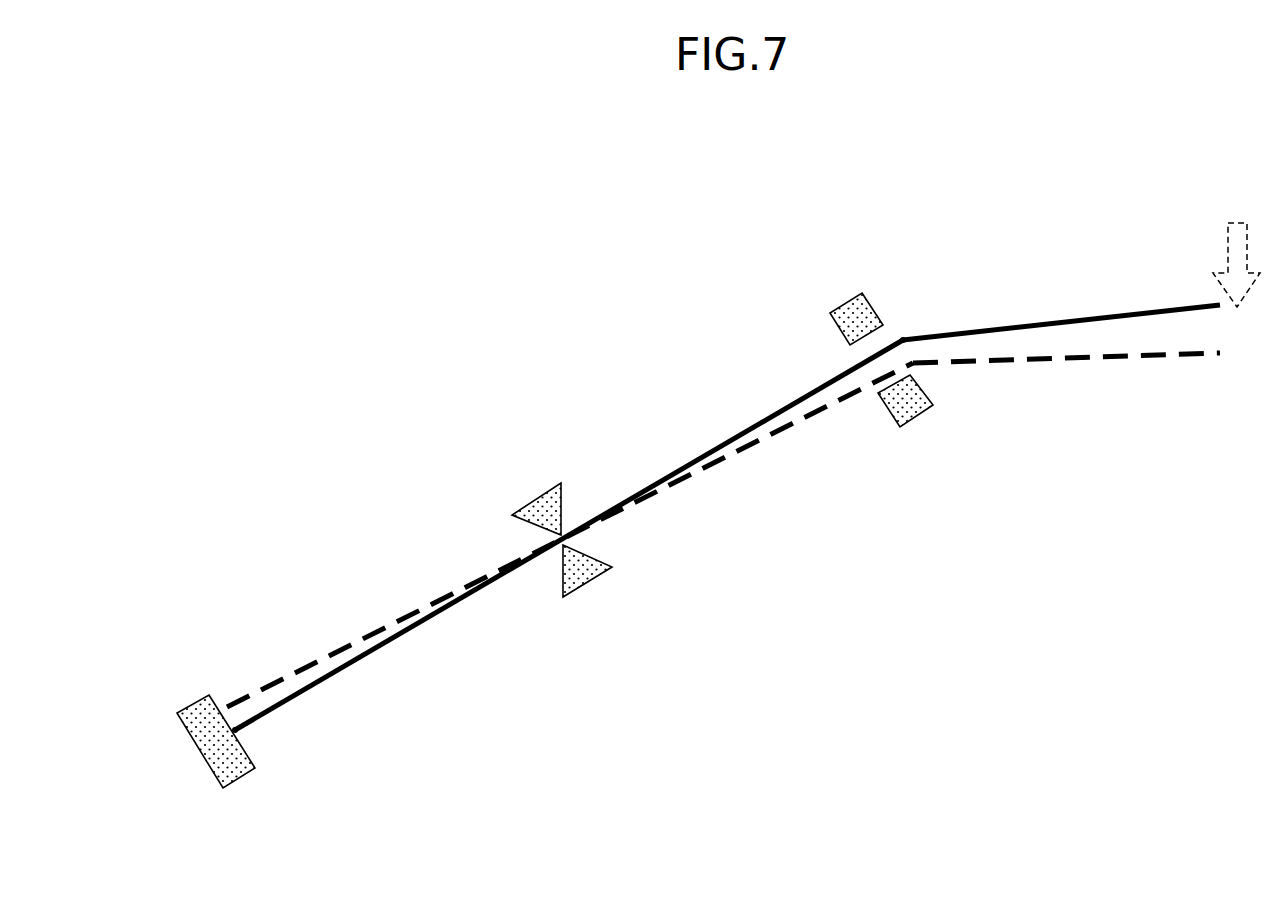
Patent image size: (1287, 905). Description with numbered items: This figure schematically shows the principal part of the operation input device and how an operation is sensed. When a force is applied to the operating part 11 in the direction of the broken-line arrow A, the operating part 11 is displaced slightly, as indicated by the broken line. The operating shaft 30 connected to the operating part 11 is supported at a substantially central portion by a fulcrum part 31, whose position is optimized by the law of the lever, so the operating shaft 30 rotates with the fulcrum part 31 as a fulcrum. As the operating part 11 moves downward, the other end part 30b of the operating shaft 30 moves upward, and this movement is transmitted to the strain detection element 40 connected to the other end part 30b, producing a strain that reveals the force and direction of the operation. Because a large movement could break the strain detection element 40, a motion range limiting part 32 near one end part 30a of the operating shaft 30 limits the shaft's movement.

The operating part 11 is at (1063, 320).
The operating shaft 30 is at (722, 442).
The one end part of the operating shaft 30a is at (903, 340).
The other end part of the operating shaft 30b is at (235, 730).
The fulcrum part 31 is at (585, 582).
The motion range limiting part 32 is at (840, 303).
The strain detection element 40 is at (242, 780).
The broken-line arrow A is at (1236, 248).